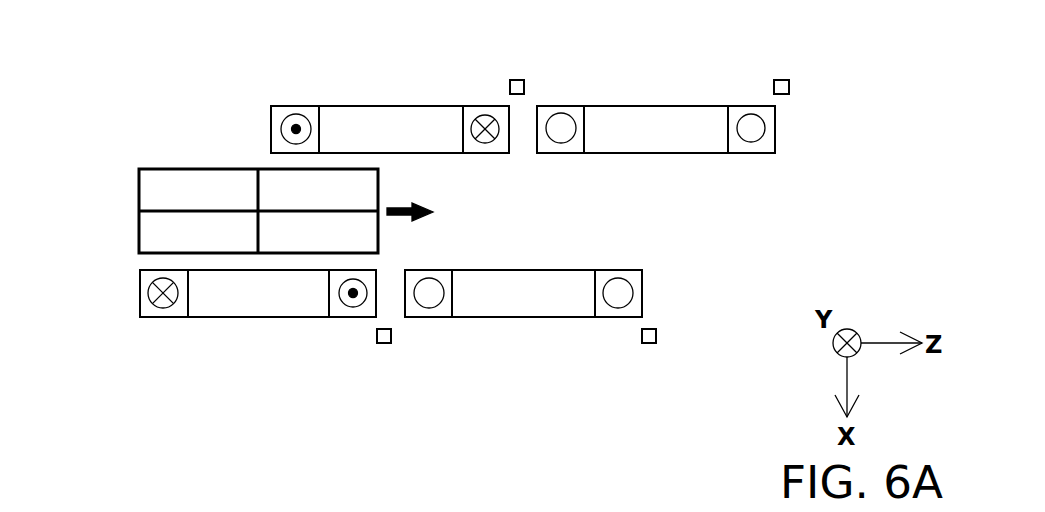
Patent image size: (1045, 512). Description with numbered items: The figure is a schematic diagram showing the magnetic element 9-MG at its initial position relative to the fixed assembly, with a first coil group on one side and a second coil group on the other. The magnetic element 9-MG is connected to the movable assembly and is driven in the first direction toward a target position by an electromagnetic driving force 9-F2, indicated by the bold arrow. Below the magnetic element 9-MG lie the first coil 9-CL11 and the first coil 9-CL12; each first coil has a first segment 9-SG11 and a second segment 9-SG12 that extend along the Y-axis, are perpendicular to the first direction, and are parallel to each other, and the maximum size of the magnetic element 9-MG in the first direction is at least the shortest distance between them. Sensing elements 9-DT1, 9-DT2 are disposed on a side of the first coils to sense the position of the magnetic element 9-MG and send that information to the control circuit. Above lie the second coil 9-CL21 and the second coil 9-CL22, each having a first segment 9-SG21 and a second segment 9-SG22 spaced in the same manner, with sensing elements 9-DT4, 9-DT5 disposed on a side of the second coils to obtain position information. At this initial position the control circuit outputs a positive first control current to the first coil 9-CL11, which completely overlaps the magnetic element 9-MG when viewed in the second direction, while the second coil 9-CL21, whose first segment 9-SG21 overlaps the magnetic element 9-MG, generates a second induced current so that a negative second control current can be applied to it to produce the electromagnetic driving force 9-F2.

The second coil 9-CL21 is at (281, 105).
The first segment 9-SG21 is at (308, 110).
The second segment 9-SG22 is at (470, 110).
The sensing element 9-DT4 is at (524, 82).
The sensing element 9-DT5 is at (789, 82).
The second coil 9-CL22 is at (776, 143).
The magnetic element 9-MG is at (139, 192).
The electromagnetic driving force 9-F2 is at (433, 212).
The first coil 9-CL11 is at (147, 318).
The first segment 9-SG11 is at (176, 312).
The second segment 9-SG12 is at (337, 312).
The sensing element 9-DT1 is at (391, 343).
The first coil 9-CL12 is at (644, 275).
The sensing element 9-DT2 is at (656, 343).